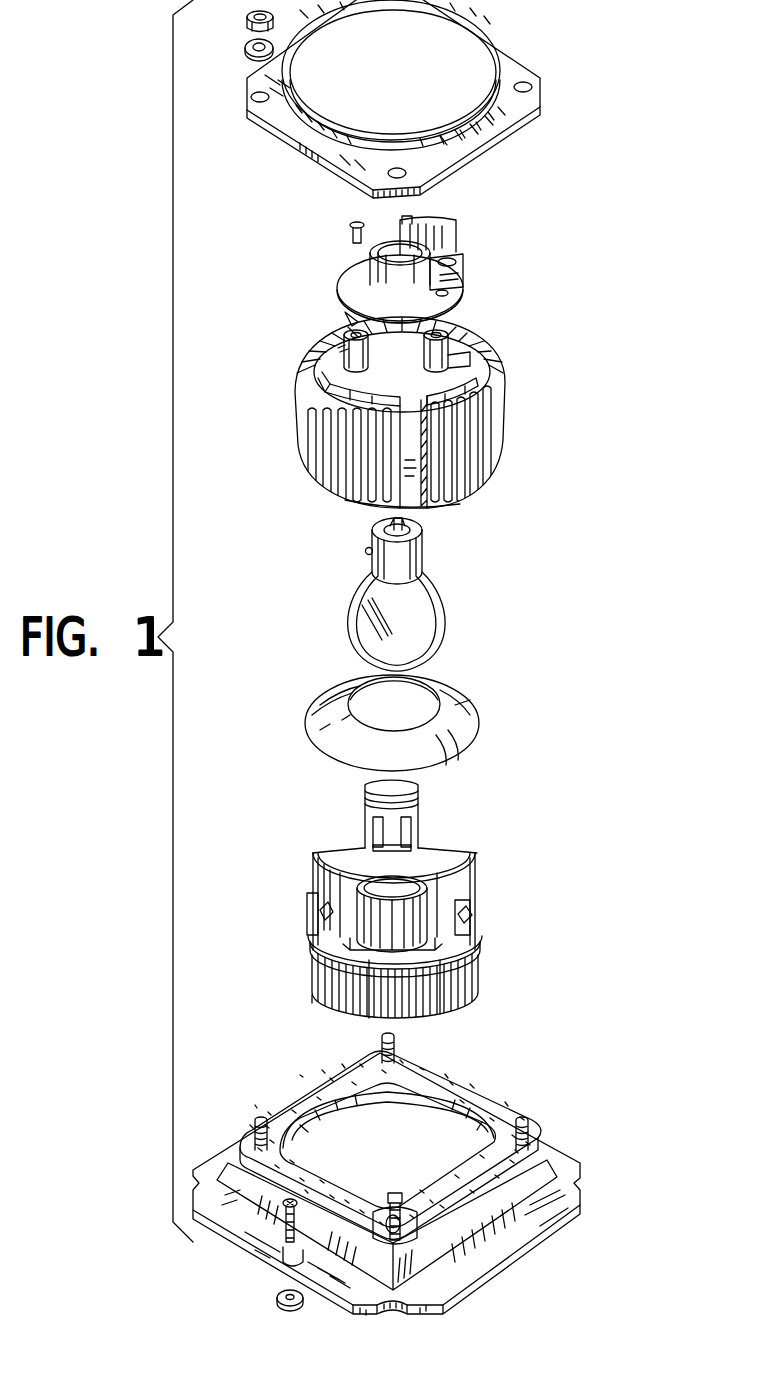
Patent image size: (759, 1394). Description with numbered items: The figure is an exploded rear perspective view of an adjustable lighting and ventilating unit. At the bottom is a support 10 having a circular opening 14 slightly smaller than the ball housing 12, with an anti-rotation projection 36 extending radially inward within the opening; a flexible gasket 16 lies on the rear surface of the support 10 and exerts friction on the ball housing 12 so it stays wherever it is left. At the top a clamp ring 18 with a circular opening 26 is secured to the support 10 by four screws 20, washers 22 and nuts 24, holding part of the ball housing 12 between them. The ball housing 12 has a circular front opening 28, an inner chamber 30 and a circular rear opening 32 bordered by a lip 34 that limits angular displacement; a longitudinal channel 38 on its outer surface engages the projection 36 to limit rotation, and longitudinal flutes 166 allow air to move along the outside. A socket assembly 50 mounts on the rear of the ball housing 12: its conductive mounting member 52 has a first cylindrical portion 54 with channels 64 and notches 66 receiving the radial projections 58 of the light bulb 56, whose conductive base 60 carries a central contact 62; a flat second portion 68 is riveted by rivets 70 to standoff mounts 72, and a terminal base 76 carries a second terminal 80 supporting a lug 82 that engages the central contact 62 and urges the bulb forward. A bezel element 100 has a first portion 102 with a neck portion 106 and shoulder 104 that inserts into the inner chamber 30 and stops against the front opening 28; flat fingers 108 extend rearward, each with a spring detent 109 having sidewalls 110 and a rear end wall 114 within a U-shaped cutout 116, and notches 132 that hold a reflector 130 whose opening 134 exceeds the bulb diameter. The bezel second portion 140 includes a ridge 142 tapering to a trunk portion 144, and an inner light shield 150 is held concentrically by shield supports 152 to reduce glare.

The support 10 is at (417, 1173).
The ball housing 12 is at (414, 427).
The circular opening 14 is at (347, 1095).
The flexible gasket 16 is at (447, 1083).
The clamp ring 18 is at (556, 95).
The screws 20 is at (381, 1045).
The washers 22 is at (245, 50).
The nuts 24 is at (246, 20).
The circular opening 26 is at (305, 100).
The circular front opening 28 is at (470, 485).
The inner chamber 30 is at (330, 400).
The circular rear opening 32 is at (468, 347).
The lip 34 is at (492, 362).
The anti-rotation projection 36 is at (394, 1192).
The channel 38 is at (418, 505).
The socket assembly 50 is at (421, 255).
The electrically conductive mounting member 52 is at (352, 285).
The first cylindrical portion 54 is at (373, 270).
The electric light bulb 56 is at (412, 591).
The radial projections 58 is at (365, 552).
The electrically conductive base 60 is at (412, 555).
The central contact 62 is at (376, 528).
The channels 64 is at (352, 320).
The notches 66 is at (456, 292).
The second portion 68 is at (338, 348).
The rivets 70 is at (352, 230).
The standoff mounts 72 is at (428, 350).
The terminal base 76 is at (442, 228).
The second terminal 80 is at (458, 258).
The lug 82 is at (410, 224).
The bezel element 100 is at (410, 910).
The first portion 102 is at (405, 898).
The shoulder 104 is at (333, 958).
The neck portion 106 is at (468, 968).
The fingers 108 is at (388, 813).
The spring detent 109 is at (315, 915).
The sidewalls 110 is at (318, 933).
The rear end wall 114 is at (308, 905).
The cutout 116 is at (417, 833).
The reflector 130 is at (438, 723).
The notches 132 is at (365, 800).
The opening 134 is at (356, 684).
The second portion 140 is at (314, 998).
The ridge 142 is at (368, 992).
The trunk portion 144 is at (447, 1005).
The inner light shield 150 is at (396, 895).
The shield supports 152 is at (405, 968).
The flutes 166 is at (338, 463).